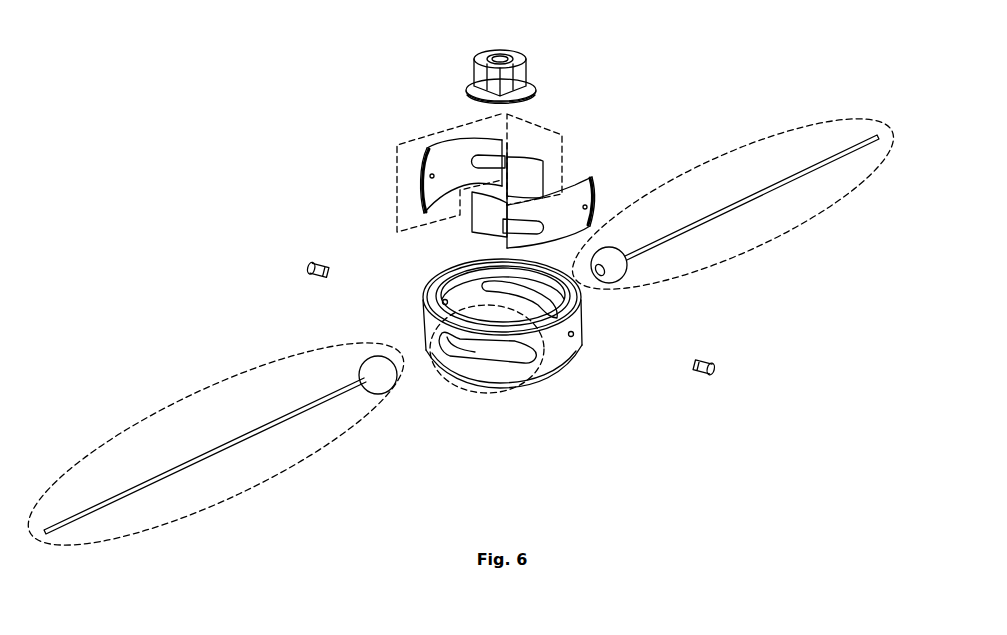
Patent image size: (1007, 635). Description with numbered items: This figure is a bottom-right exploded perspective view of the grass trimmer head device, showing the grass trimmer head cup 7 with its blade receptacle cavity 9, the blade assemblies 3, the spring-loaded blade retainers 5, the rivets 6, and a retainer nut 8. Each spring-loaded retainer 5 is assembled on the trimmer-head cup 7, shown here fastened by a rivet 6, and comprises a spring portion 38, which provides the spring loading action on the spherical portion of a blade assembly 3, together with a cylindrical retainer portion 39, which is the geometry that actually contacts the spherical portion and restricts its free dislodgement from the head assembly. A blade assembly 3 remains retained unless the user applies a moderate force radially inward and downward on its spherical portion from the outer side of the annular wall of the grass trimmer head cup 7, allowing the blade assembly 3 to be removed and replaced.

The blade assembly 3 is at (798, 231).
The spring-loaded blade retainer 5 is at (597, 193).
The rivet 6 is at (305, 267).
The grass trimmer head cup 7 is at (554, 350).
The retainer nut 8 is at (530, 65).
The blade receptacle cavity 9 is at (447, 382).
The spring portion 38 is at (396, 143).
The cylindrical retainer portion 39 is at (563, 134).